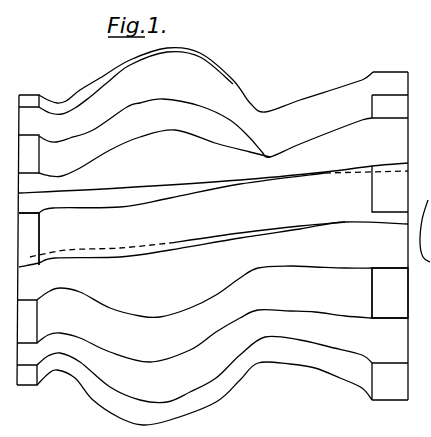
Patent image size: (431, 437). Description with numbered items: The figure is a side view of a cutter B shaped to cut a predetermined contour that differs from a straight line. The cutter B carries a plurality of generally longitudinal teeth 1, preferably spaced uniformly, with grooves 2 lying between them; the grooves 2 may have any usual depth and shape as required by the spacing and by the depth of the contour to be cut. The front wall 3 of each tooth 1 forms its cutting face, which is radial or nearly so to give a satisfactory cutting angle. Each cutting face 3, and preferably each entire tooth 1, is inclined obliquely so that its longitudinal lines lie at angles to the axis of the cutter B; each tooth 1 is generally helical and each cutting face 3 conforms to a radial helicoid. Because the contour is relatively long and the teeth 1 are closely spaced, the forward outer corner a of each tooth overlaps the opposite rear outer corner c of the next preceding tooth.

The teeth 1 is at (213, 167).
The grooves 2 is at (395, 143).
The front wall 3 is at (414, 283).
The cutter B is at (235, 80).
The forward outer corner a is at (20, 265).
The rear outer corner c is at (406, 267).